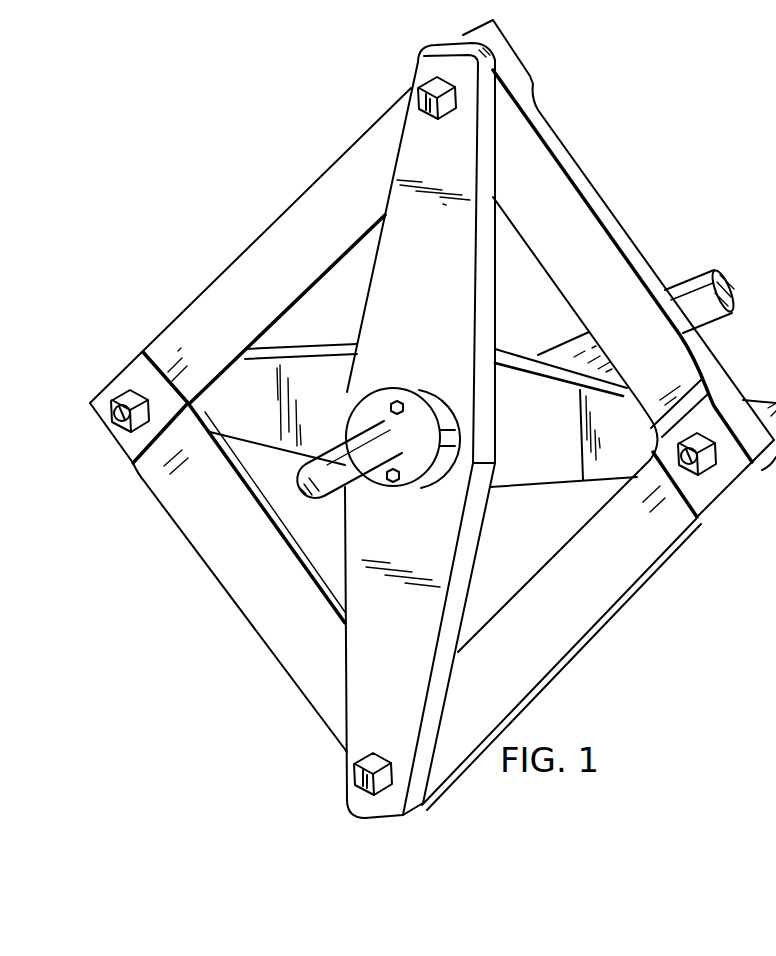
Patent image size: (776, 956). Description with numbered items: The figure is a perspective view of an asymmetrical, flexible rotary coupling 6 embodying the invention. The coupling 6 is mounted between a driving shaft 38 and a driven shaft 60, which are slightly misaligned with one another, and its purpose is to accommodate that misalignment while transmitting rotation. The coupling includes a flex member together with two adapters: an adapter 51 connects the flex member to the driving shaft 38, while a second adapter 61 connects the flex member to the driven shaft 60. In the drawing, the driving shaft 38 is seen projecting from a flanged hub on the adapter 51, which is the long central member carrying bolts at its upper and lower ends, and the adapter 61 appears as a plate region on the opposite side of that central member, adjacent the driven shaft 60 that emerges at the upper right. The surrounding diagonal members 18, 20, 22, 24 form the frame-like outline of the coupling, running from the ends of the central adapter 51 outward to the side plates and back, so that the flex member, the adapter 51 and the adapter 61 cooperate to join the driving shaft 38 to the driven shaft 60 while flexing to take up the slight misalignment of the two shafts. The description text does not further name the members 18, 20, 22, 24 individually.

The flexible rotary coupling 6 is at (276, 161).
The lower left diagonal bar 18 is at (232, 567).
The upper left diagonal bar 20 is at (275, 243).
The upper right diagonal bar 22 is at (580, 213).
The lower right diagonal bar 24 is at (568, 626).
The driving shaft 38 is at (310, 466).
The adapter 51 is at (380, 320).
The driven shaft 60 is at (683, 292).
The adapter 61 is at (555, 462).